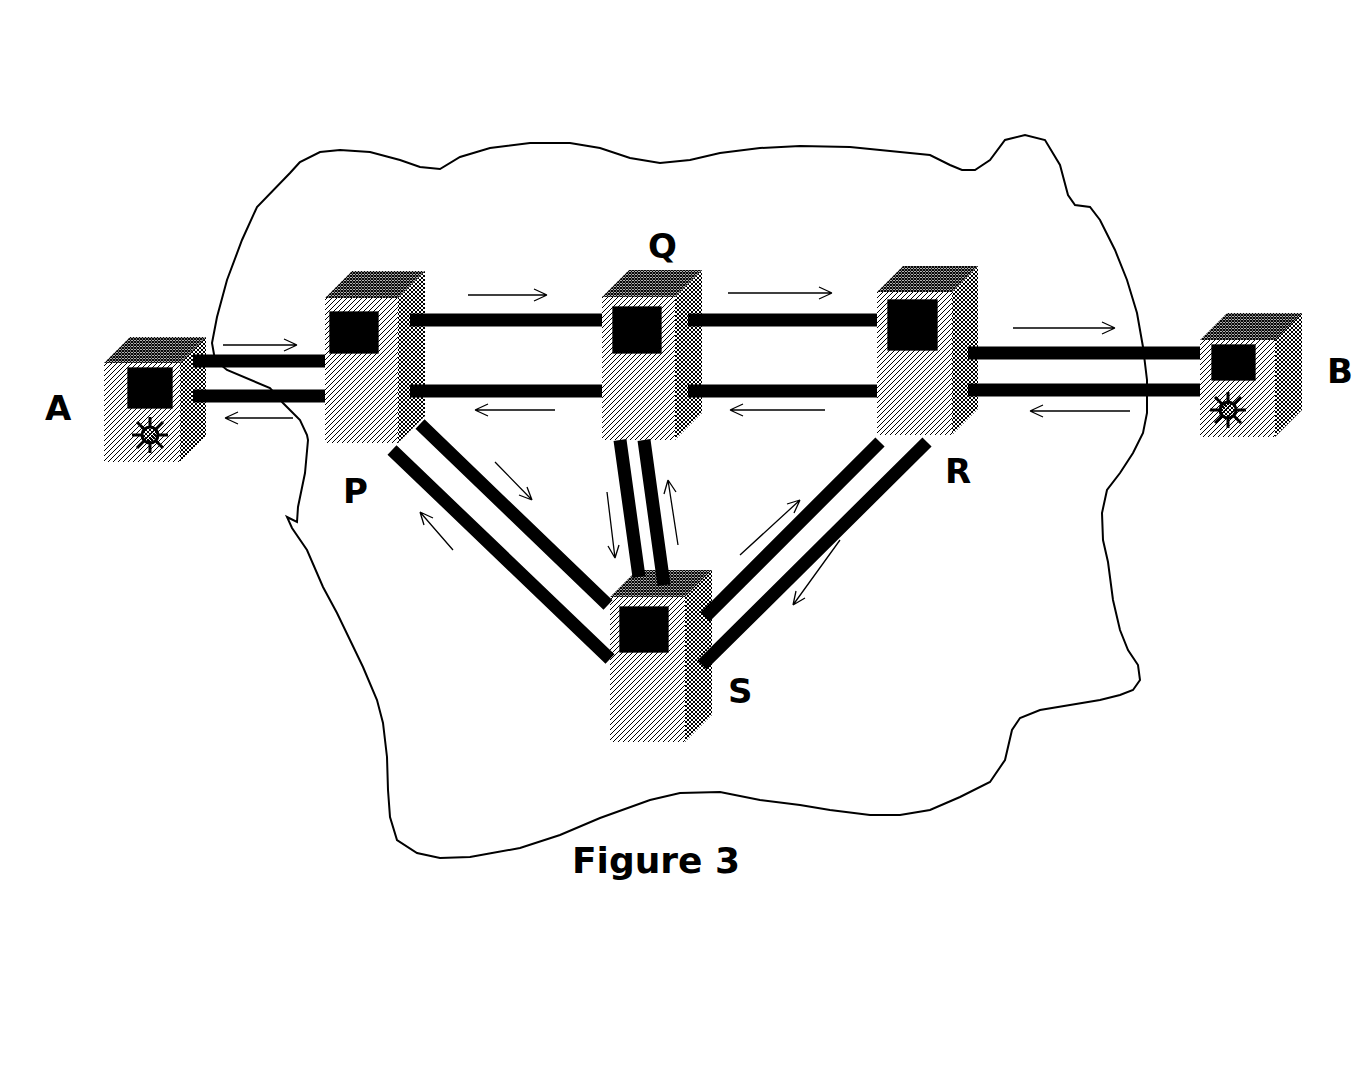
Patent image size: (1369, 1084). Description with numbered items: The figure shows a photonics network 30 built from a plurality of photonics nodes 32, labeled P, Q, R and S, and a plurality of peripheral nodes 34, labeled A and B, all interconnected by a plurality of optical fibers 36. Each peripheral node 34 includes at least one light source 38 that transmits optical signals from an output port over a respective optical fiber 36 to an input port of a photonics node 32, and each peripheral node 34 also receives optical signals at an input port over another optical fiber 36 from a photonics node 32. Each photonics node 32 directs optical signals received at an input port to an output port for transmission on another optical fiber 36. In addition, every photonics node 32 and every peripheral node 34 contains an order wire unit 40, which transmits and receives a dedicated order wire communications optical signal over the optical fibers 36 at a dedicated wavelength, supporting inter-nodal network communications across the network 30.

The photonics network 30 is at (328, 608).
The photonics node 32 is at (350, 278).
The peripheral node 34 is at (115, 387).
The optical fiber 36 is at (213, 403).
The light source 38 is at (147, 440).
The order wire unit 40 is at (148, 380).